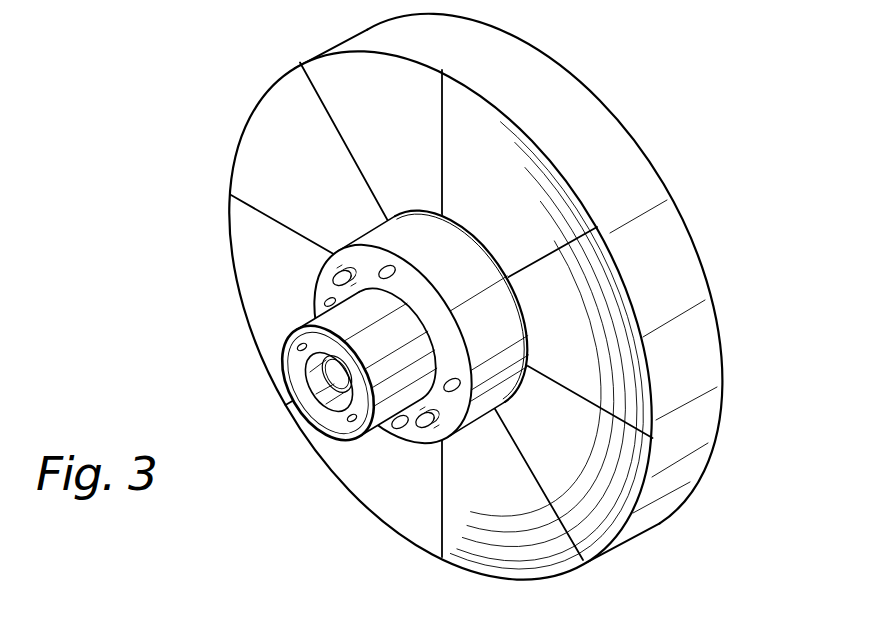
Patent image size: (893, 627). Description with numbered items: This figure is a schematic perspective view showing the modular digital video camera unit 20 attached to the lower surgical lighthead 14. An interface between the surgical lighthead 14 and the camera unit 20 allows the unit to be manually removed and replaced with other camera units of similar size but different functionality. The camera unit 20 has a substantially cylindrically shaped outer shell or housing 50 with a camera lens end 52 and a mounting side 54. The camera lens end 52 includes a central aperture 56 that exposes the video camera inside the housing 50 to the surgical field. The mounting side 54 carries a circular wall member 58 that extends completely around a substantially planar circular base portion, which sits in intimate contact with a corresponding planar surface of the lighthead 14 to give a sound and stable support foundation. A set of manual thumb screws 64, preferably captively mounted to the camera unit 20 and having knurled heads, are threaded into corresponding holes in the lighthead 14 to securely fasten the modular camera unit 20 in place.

The surgical lighthead 14 is at (246, 127).
The modular digital video camera unit 20 is at (284, 322).
The outer shell or housing 50 is at (363, 333).
The camera lens end 52 is at (316, 439).
The mounting side 54 is at (477, 223).
The central aperture 56 is at (330, 382).
The circular wall member 58 is at (492, 318).
The manual thumb screws 64 is at (338, 270).